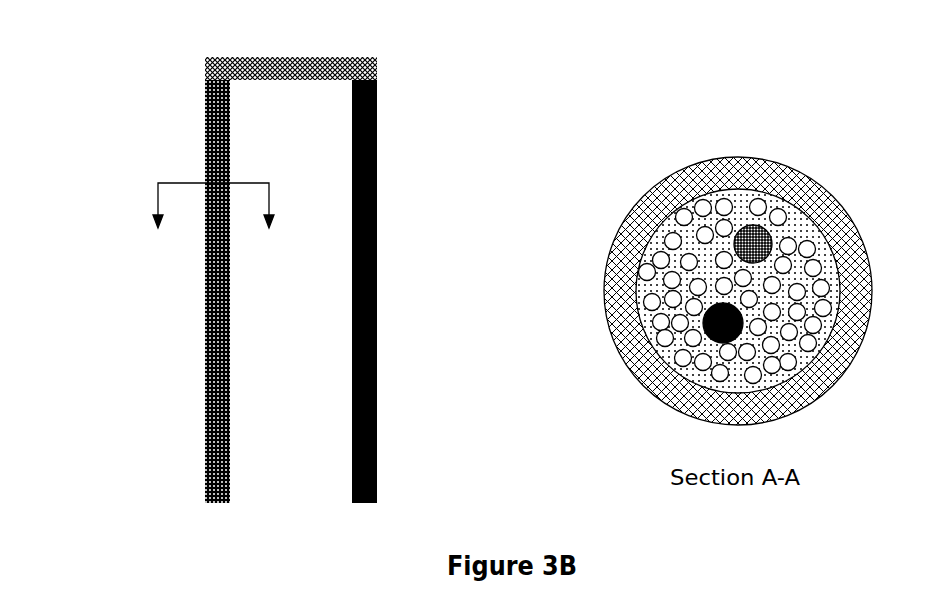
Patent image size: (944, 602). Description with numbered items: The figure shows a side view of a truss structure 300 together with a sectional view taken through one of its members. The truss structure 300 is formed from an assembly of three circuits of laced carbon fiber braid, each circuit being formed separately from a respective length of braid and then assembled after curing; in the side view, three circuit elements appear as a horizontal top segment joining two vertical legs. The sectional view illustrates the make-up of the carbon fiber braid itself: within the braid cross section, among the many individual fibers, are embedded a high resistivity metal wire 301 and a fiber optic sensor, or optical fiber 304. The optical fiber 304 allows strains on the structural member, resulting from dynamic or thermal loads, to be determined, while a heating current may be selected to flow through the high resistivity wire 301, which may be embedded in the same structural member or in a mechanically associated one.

The truss structure 300 is at (172, 61).
The fiber optic sensor (optical fiber) 304 is at (744, 236).
The high resistivity metal wire 301 is at (703, 329).